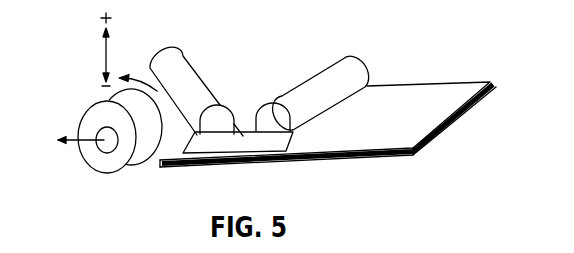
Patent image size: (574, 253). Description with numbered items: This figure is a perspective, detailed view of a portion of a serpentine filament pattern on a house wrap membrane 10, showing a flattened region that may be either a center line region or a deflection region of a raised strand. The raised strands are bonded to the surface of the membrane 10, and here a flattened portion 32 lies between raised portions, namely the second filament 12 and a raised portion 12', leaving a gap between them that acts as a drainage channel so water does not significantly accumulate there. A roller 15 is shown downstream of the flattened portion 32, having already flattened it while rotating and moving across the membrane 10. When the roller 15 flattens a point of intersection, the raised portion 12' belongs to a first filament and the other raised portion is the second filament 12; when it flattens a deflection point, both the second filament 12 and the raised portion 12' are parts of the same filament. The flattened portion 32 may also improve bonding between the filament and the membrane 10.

The membrane 10 is at (357, 156).
The second filament 12 is at (345, 87).
The raised portion 12' is at (196, 81).
The roller 15 is at (127, 146).
The flattened portion 32 is at (190, 65).